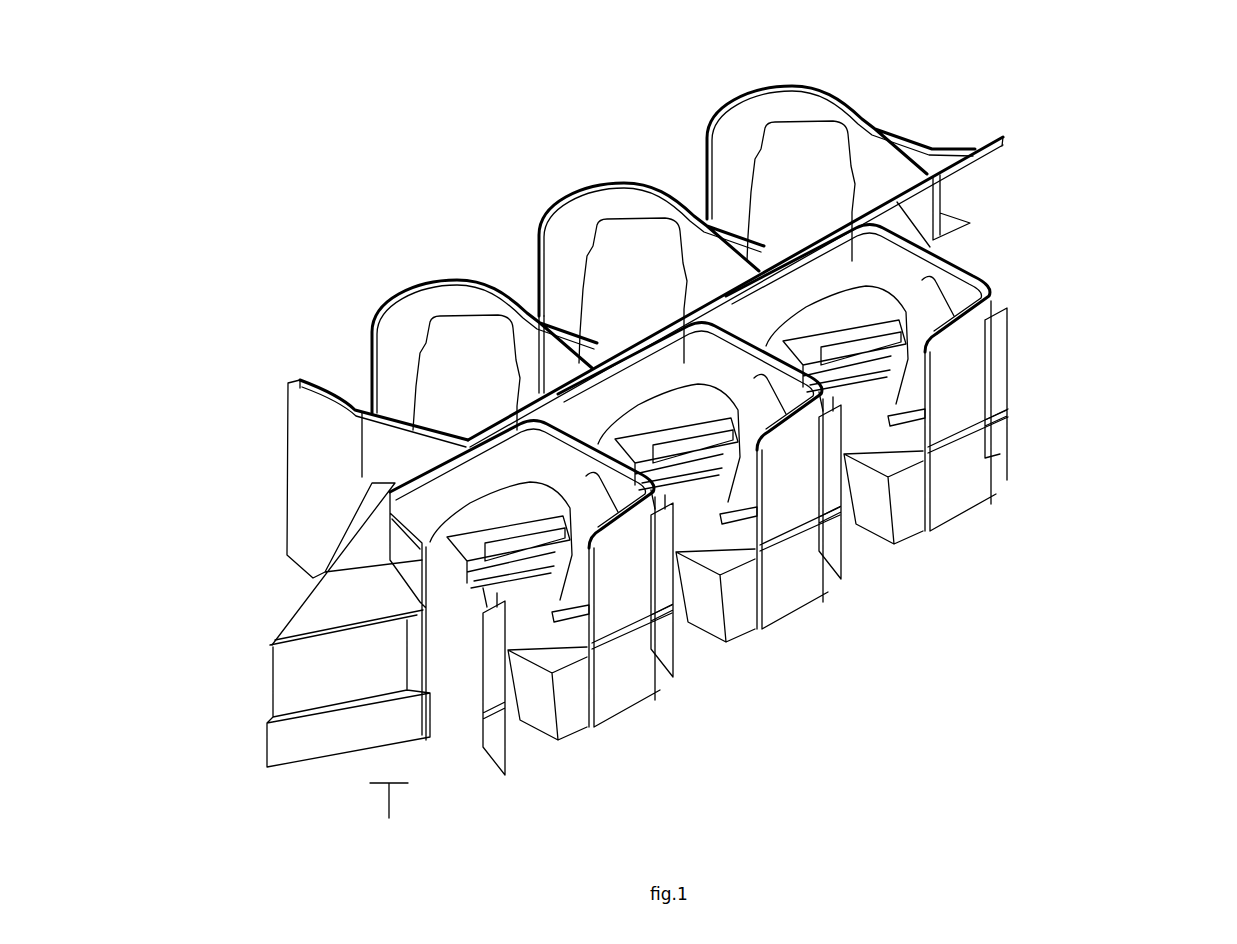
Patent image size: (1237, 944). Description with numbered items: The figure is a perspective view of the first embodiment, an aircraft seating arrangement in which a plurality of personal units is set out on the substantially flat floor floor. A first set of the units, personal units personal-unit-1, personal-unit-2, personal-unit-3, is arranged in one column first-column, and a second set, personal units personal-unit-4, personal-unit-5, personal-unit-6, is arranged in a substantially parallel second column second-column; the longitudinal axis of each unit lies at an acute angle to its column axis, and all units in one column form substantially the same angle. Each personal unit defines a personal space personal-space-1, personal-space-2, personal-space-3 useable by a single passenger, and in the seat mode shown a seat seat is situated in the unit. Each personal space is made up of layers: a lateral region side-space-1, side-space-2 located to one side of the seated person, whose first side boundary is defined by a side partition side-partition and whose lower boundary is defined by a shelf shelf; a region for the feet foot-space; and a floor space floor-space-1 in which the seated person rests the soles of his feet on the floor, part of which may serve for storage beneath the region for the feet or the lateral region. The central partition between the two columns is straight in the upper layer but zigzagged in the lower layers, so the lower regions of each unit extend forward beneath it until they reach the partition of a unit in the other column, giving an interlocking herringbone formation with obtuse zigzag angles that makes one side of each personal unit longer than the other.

The side space side partition side-partition is at (1052, 176).
The side space side-space-1 is at (838, 257).
The side space side-space-2 is at (853, 315).
The foot space foot-space is at (360, 682).
The element floor is at (389, 815).
The floor space floor-space-1 is at (517, 738).
The first column first-column is at (634, 234).
The second column second-column is at (764, 490).
The personal unit personal-unit-1 is at (737, 102).
The personal unit personal-unit-2 is at (573, 197).
The personal unit personal-unit-3 is at (428, 325).
The personal unit personal-unit-4 is at (599, 619).
The personal unit personal-unit-5 is at (817, 613).
The personal unit personal-unit-6 is at (927, 408).
The element seat is at (467, 333).
The element shelf is at (883, 282).
The personal space personal-space-1 is at (352, 377).
The personal space personal-space-2 is at (693, 632).
The personal space personal-space-3 is at (858, 535).